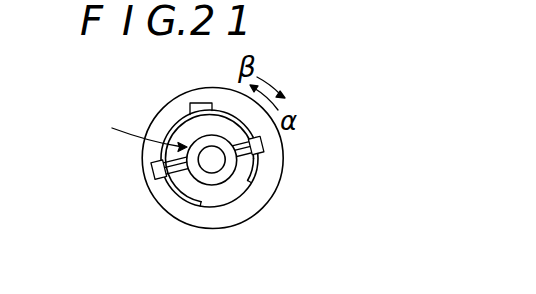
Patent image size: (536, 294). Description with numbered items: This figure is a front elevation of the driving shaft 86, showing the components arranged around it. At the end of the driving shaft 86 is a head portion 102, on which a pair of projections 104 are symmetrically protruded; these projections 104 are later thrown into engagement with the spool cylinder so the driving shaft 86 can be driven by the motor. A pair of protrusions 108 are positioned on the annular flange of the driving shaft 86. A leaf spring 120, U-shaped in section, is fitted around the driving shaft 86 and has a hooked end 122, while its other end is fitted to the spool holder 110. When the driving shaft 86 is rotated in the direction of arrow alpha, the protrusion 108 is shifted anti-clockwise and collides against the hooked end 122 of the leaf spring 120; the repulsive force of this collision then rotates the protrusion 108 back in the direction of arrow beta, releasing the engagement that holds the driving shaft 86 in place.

The driving shaft 86 is at (129, 132).
The head portion 102 is at (228, 182).
The projections 104 is at (185, 182).
The protrusions 108 is at (153, 169).
The spool holder 110 is at (225, 213).
The leaf spring 120 is at (165, 178).
The hooked end 122 is at (198, 106).